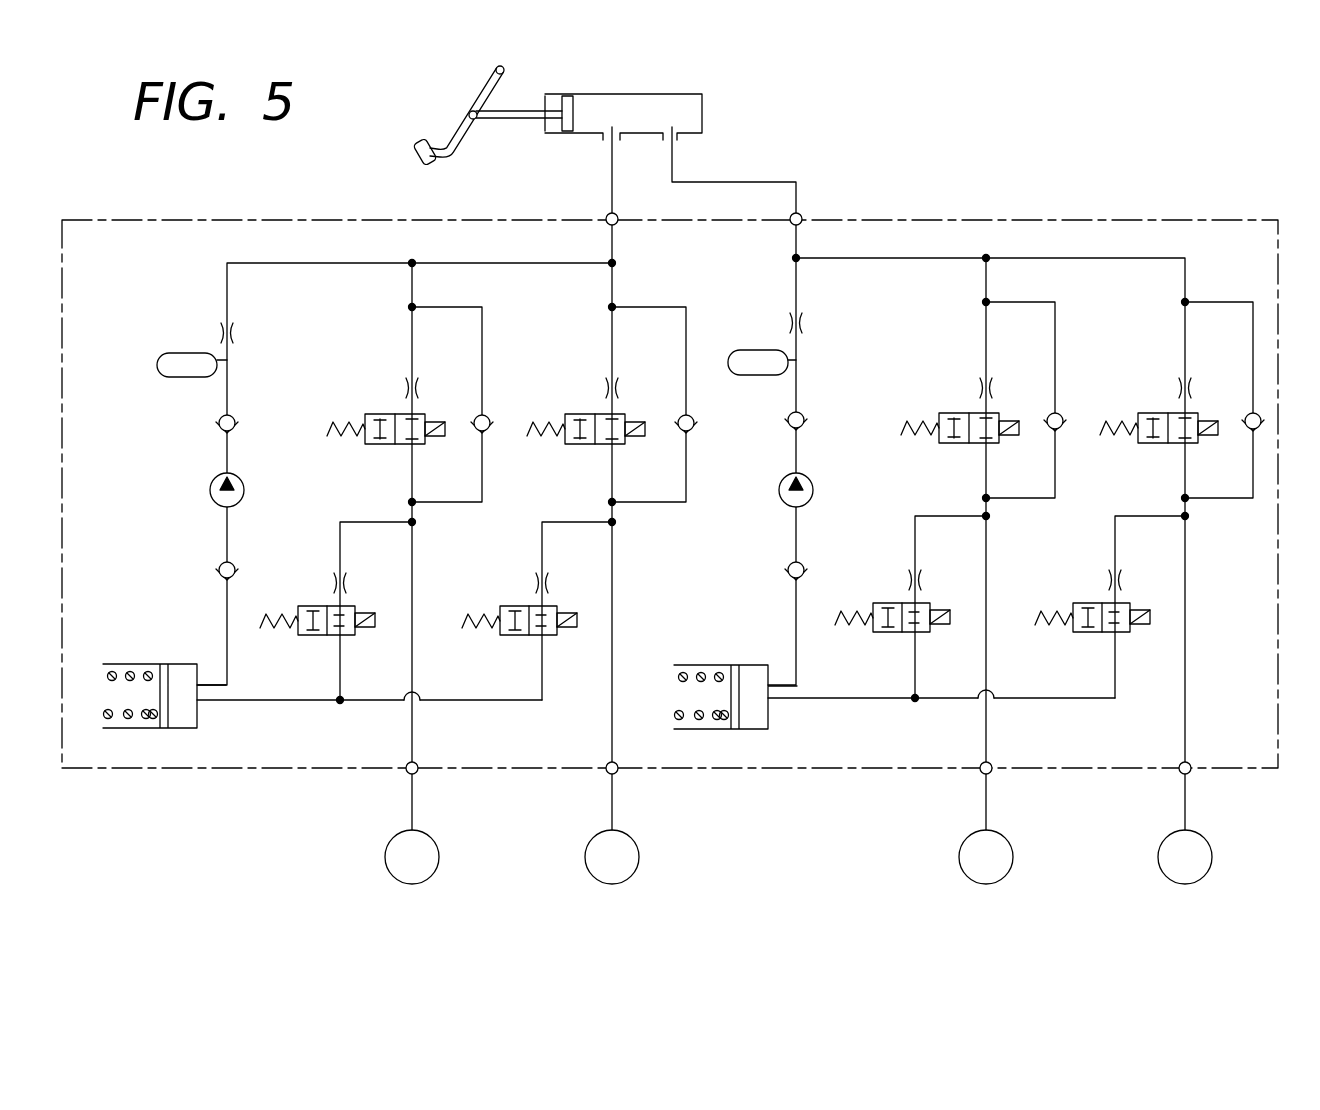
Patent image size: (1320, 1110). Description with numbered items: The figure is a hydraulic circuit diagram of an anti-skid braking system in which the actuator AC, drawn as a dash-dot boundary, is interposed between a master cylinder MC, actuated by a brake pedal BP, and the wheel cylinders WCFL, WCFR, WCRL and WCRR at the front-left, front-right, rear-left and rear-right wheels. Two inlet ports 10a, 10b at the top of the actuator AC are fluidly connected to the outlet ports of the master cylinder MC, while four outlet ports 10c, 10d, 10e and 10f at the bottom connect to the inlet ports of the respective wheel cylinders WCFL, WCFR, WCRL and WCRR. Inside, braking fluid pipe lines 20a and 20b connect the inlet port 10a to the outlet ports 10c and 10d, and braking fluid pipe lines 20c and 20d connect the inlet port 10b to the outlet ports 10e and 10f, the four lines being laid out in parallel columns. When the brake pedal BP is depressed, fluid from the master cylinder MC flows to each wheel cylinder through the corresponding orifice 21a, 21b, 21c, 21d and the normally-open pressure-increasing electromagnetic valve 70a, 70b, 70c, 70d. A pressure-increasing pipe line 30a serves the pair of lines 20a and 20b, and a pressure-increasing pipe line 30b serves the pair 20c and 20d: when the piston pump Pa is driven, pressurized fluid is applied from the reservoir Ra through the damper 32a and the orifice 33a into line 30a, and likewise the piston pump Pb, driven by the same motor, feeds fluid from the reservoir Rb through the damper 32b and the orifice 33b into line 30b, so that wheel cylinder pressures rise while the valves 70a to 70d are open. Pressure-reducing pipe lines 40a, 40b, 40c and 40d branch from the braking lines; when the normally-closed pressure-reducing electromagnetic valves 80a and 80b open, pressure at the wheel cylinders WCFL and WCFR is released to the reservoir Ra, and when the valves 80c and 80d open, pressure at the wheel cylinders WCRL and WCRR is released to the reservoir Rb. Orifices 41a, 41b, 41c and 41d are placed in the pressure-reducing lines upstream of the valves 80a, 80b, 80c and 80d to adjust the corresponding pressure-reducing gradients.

The actuator AC is at (245, 220).
The brake pedal BP is at (478, 98).
The master cylinder MC is at (590, 120).
The inlet port 10a is at (618, 224).
The inlet port 10b is at (801, 224).
The outlet port 10c is at (406, 776).
The outlet port 10d is at (607, 776).
The outlet port 10e is at (981, 776).
The outlet port 10f is at (1180, 776).
The pressure-increasing pipe line 30a is at (225, 274).
The pressure-increasing pipe line 30b is at (800, 292).
The damper 32a is at (186, 358).
The damper 32b is at (752, 356).
The orifice 33a is at (240, 335).
The orifice 33b is at (808, 327).
The braking fluid pipe line 20a is at (410, 470).
The braking fluid pipe line 20b is at (610, 470).
The braking fluid pipe line 20c is at (984, 468).
The braking fluid pipe line 20d is at (1183, 468).
The orifice 21a is at (402, 388).
The orifice 21b is at (602, 388).
The orifice 21c is at (976, 388).
The orifice 21d is at (1175, 388).
The pressure-increasing electromagnetic valve 70a is at (376, 414).
The pressure-increasing electromagnetic valve 70b is at (576, 414).
The pressure-increasing electromagnetic valve 70c is at (950, 413).
The pressure-increasing electromagnetic valve 70d is at (1150, 413).
The pressure-reducing pipe line 40a is at (338, 545).
The pressure-reducing pipe line 40b is at (540, 545).
The pressure-reducing pipe line 40c is at (913, 540).
The pressure-reducing pipe line 40d is at (1113, 540).
The orifice 41a is at (331, 583).
The orifice 41b is at (533, 583).
The orifice 41c is at (906, 580).
The orifice 41d is at (1106, 580).
The pressure-reducing electromagnetic valve 80a is at (318, 637).
The pressure-reducing electromagnetic valve 80b is at (518, 637).
The pressure-reducing electromagnetic valve 80c is at (893, 634).
The pressure-reducing electromagnetic valve 80d is at (1100, 634).
The piston pump Pa is at (211, 484).
The piston pump Pb is at (781, 484).
The reservoir Ra is at (136, 664).
The reservoir Rb is at (718, 665).
The wheel cylinder WCFL is at (396, 855).
The wheel cylinder WCFR is at (602, 855).
The wheel cylinder WCRL is at (970, 850).
The wheel cylinder WCRR is at (1170, 850).